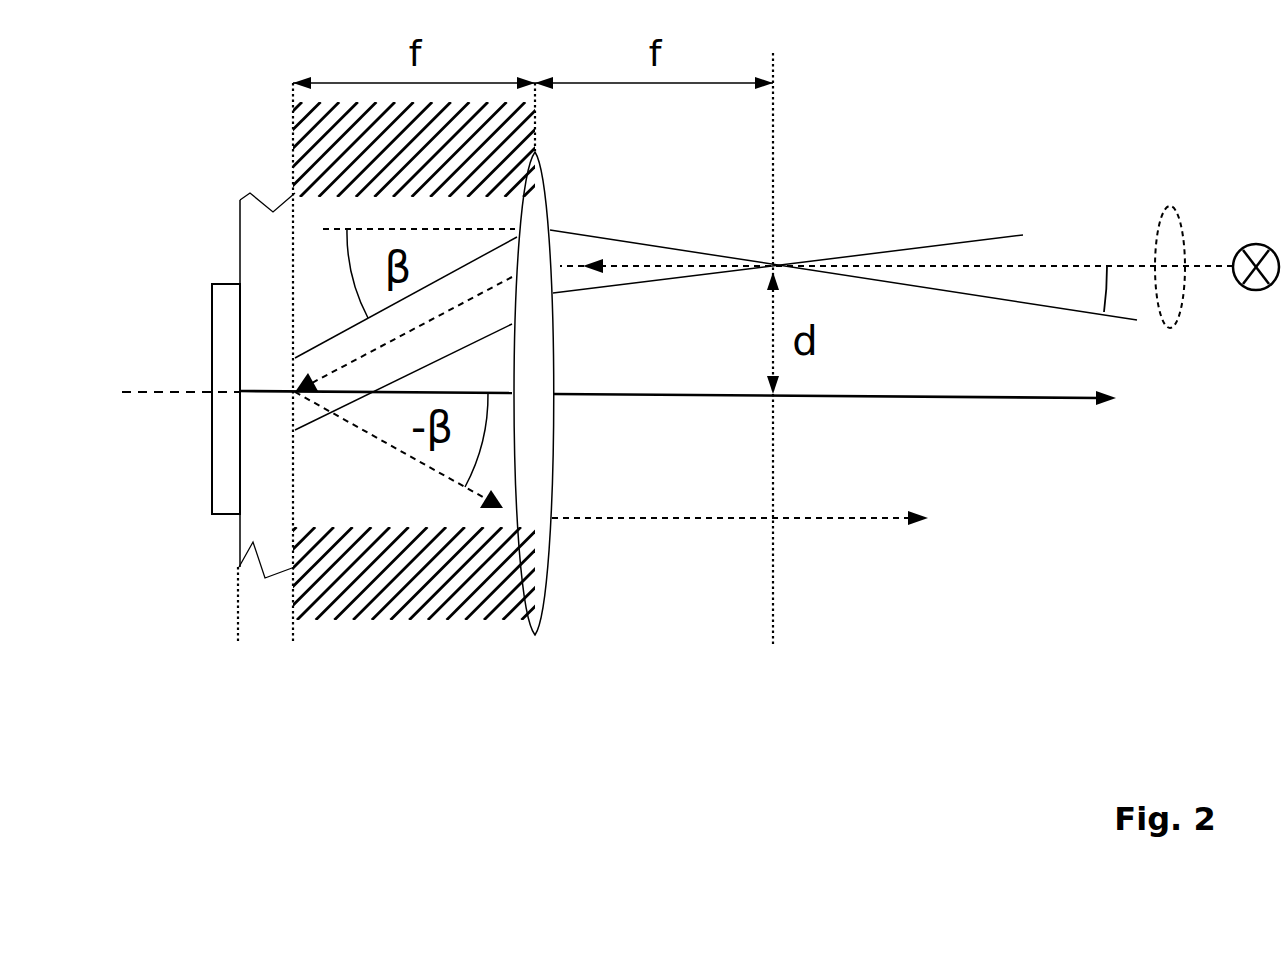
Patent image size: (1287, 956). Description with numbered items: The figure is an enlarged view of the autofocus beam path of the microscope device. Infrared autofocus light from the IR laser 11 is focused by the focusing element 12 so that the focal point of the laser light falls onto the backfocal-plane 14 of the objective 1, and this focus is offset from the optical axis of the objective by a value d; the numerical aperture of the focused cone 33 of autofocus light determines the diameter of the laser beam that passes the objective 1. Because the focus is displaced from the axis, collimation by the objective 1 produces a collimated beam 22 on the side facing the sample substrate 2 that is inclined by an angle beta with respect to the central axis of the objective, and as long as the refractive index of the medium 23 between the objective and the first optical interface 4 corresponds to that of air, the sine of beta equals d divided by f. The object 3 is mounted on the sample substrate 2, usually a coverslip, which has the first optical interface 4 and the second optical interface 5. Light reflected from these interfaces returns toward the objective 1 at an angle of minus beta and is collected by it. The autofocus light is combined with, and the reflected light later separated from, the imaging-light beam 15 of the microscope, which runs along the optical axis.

The objective 1 is at (542, 588).
The sample substrate 2 is at (252, 530).
The object 3 is at (226, 308).
The first optical interface 4 is at (288, 386).
The second optical interface 5 is at (237, 628).
The IR laser 11 is at (1255, 289).
The focusing element 12 is at (1166, 220).
The backfocal-plane 14 is at (773, 605).
The imaging-light beam 15 is at (1010, 398).
The collimated beam 22 is at (450, 308).
The medium 23 is at (411, 361).
The focused cone 33 is at (1079, 287).